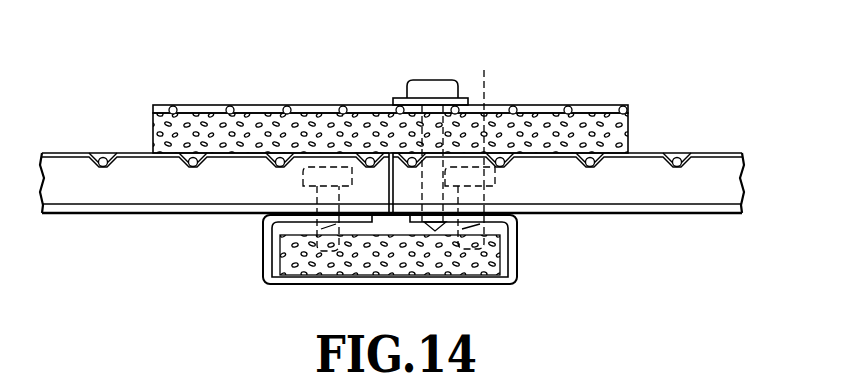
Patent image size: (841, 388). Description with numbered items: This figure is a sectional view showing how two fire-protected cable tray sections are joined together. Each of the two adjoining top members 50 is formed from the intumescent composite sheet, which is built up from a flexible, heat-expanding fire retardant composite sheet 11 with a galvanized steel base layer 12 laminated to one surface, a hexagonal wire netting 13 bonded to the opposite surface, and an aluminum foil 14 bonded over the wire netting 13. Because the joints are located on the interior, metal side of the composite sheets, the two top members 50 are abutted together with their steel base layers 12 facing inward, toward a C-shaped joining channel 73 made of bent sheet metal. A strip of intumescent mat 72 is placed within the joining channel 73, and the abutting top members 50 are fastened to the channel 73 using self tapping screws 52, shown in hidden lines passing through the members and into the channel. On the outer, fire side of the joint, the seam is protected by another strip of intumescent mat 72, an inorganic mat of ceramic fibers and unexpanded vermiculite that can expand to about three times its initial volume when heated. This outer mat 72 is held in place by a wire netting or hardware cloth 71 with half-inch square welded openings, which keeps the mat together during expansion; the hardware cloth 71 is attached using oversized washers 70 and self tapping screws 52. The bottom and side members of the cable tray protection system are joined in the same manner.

The fire retardant composite sheet 11 is at (112, 197).
The galvanized steel base layer 12 is at (167, 212).
The hexagonal wire netting 13 is at (103, 152).
The aluminum foil 14 is at (132, 152).
The top member 50 is at (55, 150).
The self tapping screw 52 is at (448, 85).
The oversized washer 70 is at (395, 98).
The wire netting (hardware cloth) 71 is at (568, 107).
The intumescent mat 72 is at (597, 123).
The C-shaped joining channel 73 is at (513, 287).